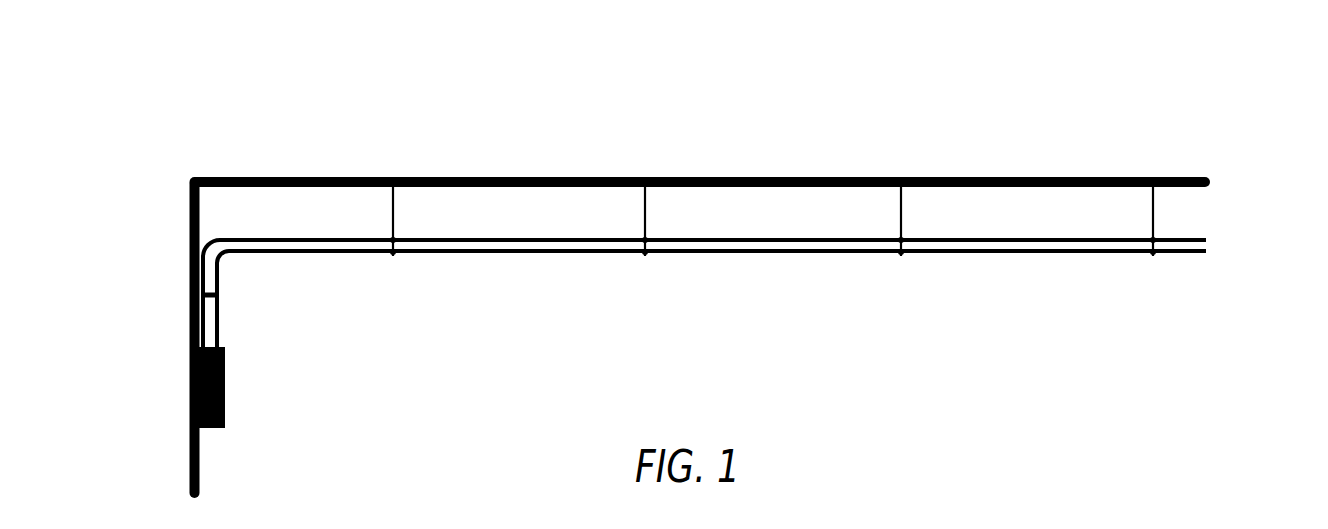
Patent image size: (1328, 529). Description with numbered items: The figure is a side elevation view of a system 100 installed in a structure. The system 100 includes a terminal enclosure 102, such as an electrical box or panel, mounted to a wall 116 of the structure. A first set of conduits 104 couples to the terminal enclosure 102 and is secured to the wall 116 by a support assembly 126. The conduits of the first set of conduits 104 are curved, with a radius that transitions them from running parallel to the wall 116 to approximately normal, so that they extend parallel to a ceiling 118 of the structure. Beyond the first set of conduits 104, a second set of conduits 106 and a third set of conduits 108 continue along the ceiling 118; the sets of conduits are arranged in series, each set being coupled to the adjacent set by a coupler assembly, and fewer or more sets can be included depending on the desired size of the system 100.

The system 100 is at (1180, 108).
The terminal enclosure 102 is at (190, 367).
The first set of conduits 104 is at (308, 310).
The second set of conduits 106 is at (891, 290).
The third set of conduits 108 is at (1219, 300).
The wall 116 is at (190, 230).
The ceiling 118 is at (438, 177).
The support assembly 126 is at (215, 300).